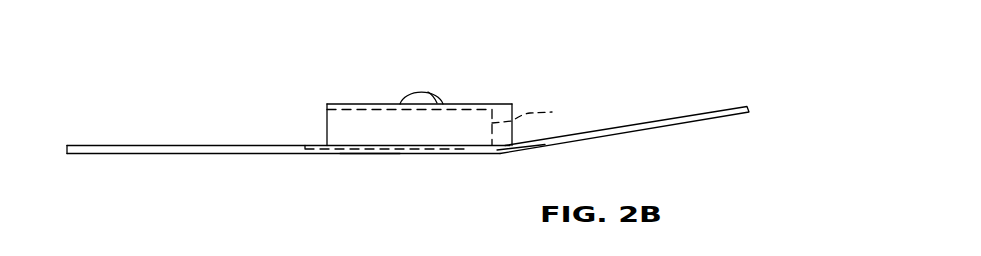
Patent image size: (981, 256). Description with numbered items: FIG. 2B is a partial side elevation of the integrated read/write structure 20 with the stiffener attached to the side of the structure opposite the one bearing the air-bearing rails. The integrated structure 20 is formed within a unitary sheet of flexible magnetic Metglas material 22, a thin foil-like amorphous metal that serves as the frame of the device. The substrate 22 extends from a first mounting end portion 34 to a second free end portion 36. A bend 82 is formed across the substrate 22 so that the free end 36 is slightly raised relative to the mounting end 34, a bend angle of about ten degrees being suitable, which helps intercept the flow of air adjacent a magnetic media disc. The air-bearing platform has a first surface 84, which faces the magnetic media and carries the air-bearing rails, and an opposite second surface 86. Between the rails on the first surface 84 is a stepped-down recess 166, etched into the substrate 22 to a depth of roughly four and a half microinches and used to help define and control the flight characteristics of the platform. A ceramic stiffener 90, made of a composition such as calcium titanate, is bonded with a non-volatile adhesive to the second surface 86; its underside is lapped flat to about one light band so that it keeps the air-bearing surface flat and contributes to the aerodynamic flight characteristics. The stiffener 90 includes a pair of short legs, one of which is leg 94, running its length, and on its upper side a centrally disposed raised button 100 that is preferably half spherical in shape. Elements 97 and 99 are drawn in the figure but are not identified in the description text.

The integrated read/write structure 20 is at (552, 90).
The magnetic sheet material 22 is at (172, 146).
The first mounting end portion 34 is at (72, 146).
The second free end portion 36 is at (747, 107).
The bend 82 is at (500, 154).
The first surface 84 is at (367, 154).
The second surface 86 is at (347, 145).
The stiffener 90 is at (373, 104).
The leg 94 is at (505, 104).
The end wall 97 is at (326, 118).
The passage 99 is at (537, 109).
The raised button 100 is at (435, 91).
The stepped-down recess 166 is at (430, 149).